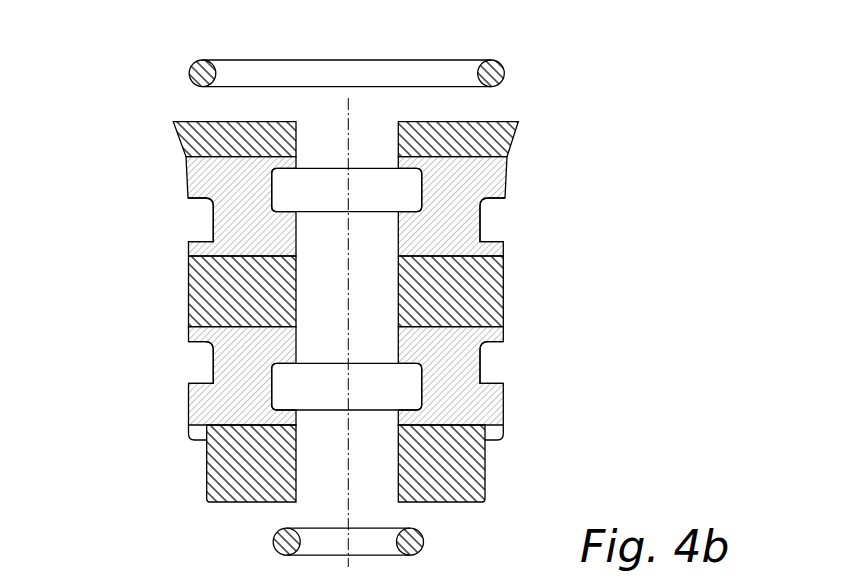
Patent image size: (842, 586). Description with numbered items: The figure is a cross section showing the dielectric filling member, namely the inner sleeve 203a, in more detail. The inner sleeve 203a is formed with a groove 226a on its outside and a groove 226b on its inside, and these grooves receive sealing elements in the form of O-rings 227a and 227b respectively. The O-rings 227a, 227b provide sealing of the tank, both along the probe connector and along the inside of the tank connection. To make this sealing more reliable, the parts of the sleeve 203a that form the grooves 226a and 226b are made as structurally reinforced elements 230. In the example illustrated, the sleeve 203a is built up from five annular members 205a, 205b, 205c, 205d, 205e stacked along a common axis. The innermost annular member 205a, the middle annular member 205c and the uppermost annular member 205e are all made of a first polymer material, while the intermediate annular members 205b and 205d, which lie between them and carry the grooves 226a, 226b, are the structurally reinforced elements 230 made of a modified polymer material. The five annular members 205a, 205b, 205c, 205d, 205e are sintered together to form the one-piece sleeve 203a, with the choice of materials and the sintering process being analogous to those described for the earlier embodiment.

The inner sleeve 203a is at (615, 335).
The innermost annular member 205a is at (482, 470).
The intermediate annular member 205b is at (487, 405).
The middle annular member 205c is at (487, 300).
The intermediate annular member 205d is at (490, 185).
The uppermost annular member 205e is at (513, 142).
The groove 226a is at (198, 223).
The groove 226b is at (388, 193).
The O-ring 227a is at (190, 73).
The O-ring 227b is at (275, 540).
The structurally reinforced element 230 is at (197, 178).